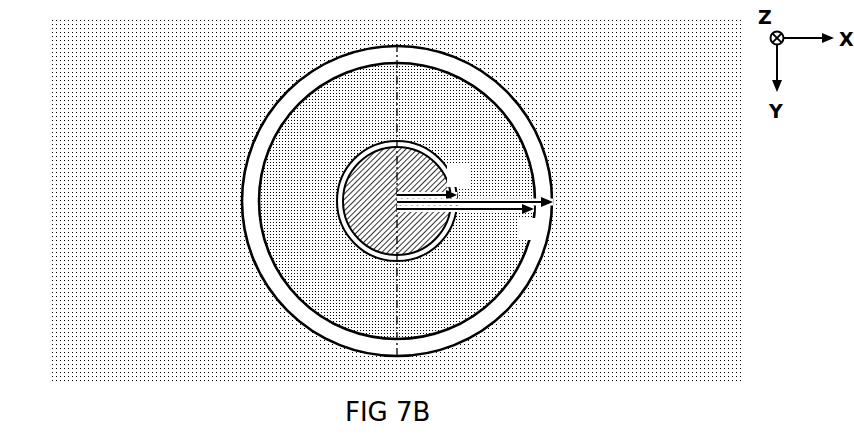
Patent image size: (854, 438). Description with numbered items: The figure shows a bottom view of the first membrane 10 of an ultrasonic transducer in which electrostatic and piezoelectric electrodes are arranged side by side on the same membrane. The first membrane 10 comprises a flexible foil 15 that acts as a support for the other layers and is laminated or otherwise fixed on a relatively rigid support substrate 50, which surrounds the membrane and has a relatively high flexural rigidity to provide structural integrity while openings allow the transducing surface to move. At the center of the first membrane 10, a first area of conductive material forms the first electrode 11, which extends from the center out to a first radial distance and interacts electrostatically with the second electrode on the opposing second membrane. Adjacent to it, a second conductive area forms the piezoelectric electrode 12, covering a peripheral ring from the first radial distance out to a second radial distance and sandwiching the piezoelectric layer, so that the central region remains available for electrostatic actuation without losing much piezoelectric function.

The first membrane 10 is at (372, 199).
The first electrode 11 is at (397, 201).
The piezoelectric electrode 12 is at (375, 201).
The flexible foil 15 is at (257, 158).
The support substrate 50 is at (397, 200).